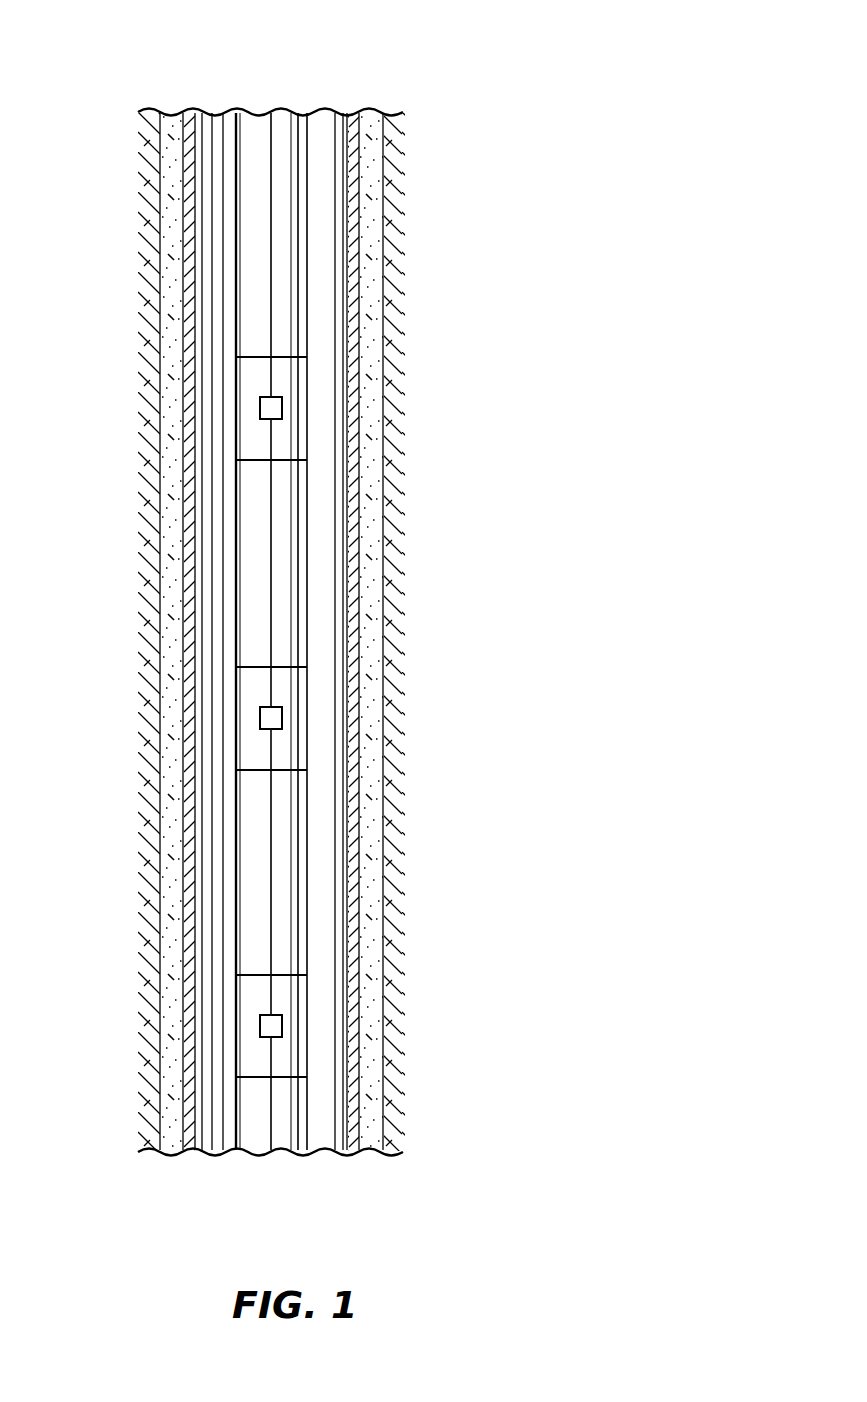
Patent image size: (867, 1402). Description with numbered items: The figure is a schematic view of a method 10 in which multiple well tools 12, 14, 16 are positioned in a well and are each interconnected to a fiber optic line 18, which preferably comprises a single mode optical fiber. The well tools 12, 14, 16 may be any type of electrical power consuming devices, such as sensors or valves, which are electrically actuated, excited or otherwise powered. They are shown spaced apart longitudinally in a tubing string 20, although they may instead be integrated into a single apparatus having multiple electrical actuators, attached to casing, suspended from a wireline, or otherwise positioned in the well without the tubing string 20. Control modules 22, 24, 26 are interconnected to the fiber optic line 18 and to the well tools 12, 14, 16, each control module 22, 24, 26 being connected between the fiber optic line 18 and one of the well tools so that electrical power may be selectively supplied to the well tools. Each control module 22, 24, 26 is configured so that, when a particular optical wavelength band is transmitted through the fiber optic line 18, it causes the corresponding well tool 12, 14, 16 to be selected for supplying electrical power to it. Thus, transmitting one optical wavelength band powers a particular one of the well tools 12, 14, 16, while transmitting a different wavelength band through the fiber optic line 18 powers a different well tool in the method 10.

The method 10 is at (529, 96).
The well tool 12 is at (307, 405).
The well tool 14 is at (308, 713).
The well tool 16 is at (308, 1026).
The fiber optic line 18 is at (272, 242).
The tubing string 20 is at (308, 563).
The control module 22 is at (260, 409).
The control module 24 is at (260, 718).
The control module 26 is at (260, 1026).